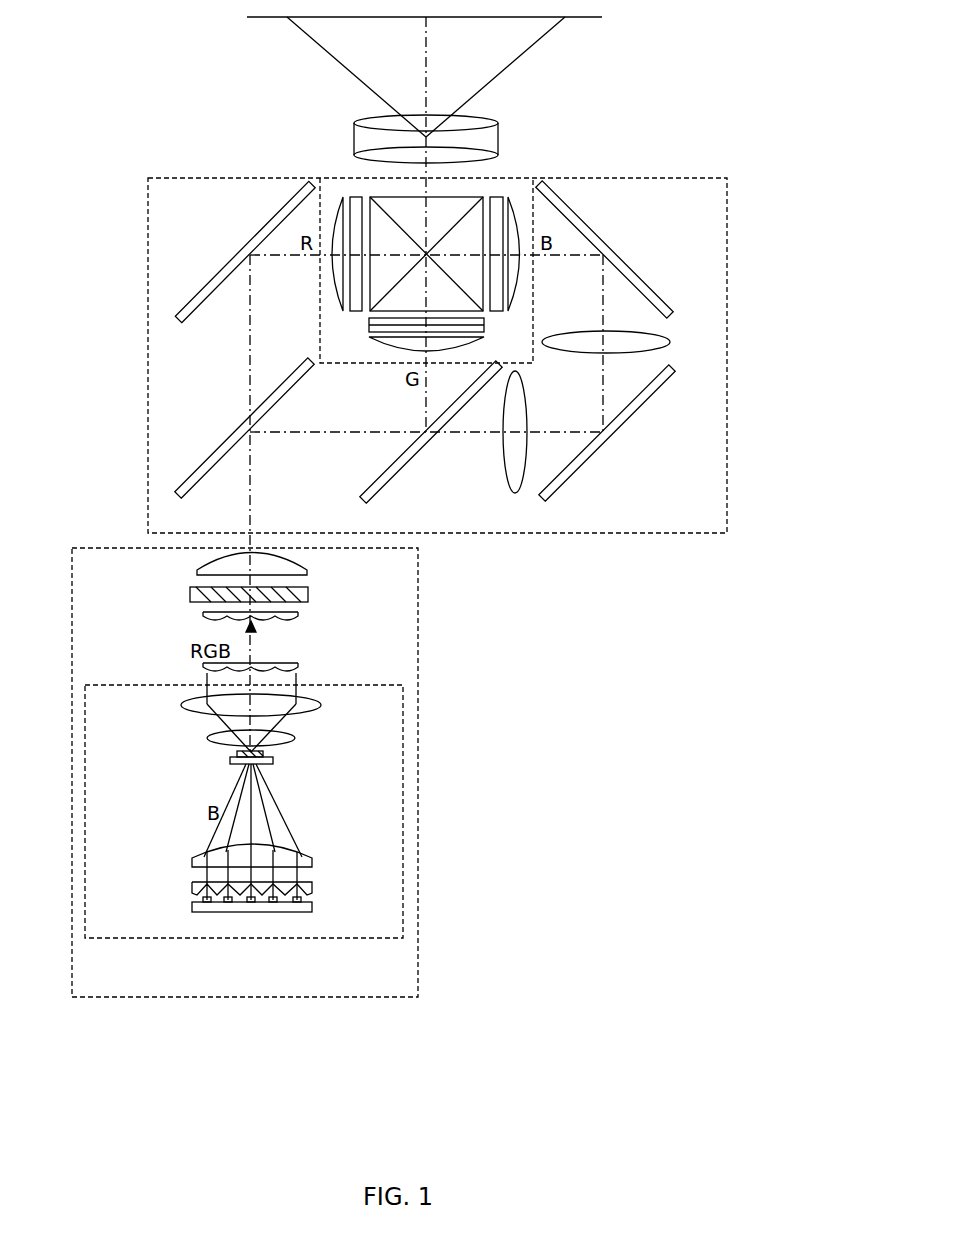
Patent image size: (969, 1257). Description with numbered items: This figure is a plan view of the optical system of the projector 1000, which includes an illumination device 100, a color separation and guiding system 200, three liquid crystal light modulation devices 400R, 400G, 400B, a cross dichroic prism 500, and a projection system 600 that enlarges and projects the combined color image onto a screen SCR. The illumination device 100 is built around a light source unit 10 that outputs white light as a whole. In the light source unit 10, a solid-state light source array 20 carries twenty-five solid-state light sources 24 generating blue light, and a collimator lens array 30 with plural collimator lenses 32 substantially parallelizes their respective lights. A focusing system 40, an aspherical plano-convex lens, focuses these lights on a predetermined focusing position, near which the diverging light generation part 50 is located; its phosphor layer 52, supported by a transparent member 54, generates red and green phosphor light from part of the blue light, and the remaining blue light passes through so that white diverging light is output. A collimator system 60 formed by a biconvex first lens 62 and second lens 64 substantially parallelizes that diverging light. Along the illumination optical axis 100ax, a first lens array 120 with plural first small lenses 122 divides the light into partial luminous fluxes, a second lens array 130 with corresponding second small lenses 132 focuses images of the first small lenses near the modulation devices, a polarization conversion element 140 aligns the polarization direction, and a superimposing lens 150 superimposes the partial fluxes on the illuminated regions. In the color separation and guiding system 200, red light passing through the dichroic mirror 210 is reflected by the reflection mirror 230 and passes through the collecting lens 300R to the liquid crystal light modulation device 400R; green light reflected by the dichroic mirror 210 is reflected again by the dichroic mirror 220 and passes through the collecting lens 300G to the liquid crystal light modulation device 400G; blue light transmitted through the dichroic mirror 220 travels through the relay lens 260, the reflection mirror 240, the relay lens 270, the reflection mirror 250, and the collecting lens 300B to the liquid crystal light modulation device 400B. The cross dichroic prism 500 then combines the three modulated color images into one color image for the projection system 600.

The projector 1000 is at (785, 33).
The screen SCR is at (590, 20).
The projection system 600 is at (353, 133).
The cross dichroic prism 500 is at (467, 193).
The liquid crystal light modulation device for red light 400R is at (356, 196).
The liquid crystal light modulation device for green light 400G is at (370, 322).
The liquid crystal light modulation device for blue light 400B is at (497, 195).
The collecting lens 300R is at (338, 197).
The collecting lens 300G is at (366, 343).
The collecting lens 300B is at (515, 195).
The color separation and guiding system 200 is at (148, 380).
The dichroic mirror 210 is at (185, 490).
The dichroic mirror 220 is at (392, 483).
The reflection mirror 230 is at (185, 305).
The reflection mirror 240 is at (570, 480).
The reflection mirror 250 is at (665, 296).
The relay lens 260 is at (512, 493).
The relay lens 270 is at (667, 342).
The illumination device 100 is at (353, 1000).
The illumination optical axis 100ax is at (250, 548).
The light source unit 10 is at (353, 940).
The superimposing lens 150 is at (308, 575).
The polarization conversion element 140 is at (310, 592).
The second lens array 130 is at (298, 613).
The second small lens 132 is at (203, 615).
The first lens array 120 is at (298, 665).
The first small lens 122 is at (203, 665).
The collimator system 60 is at (127, 695).
The second lens 64 is at (182, 705).
The first lens 62 is at (207, 740).
The diverging light generation part 50 is at (345, 726).
The phosphor layer 52 is at (263, 753).
The transparent member 54 is at (274, 761).
The focusing system 40 is at (313, 862).
The collimator lens array 30 is at (320, 884).
The collimator lens 32 is at (205, 888).
The solid-state light source array 20 is at (320, 906).
The solid-state light source 24 is at (203, 899).